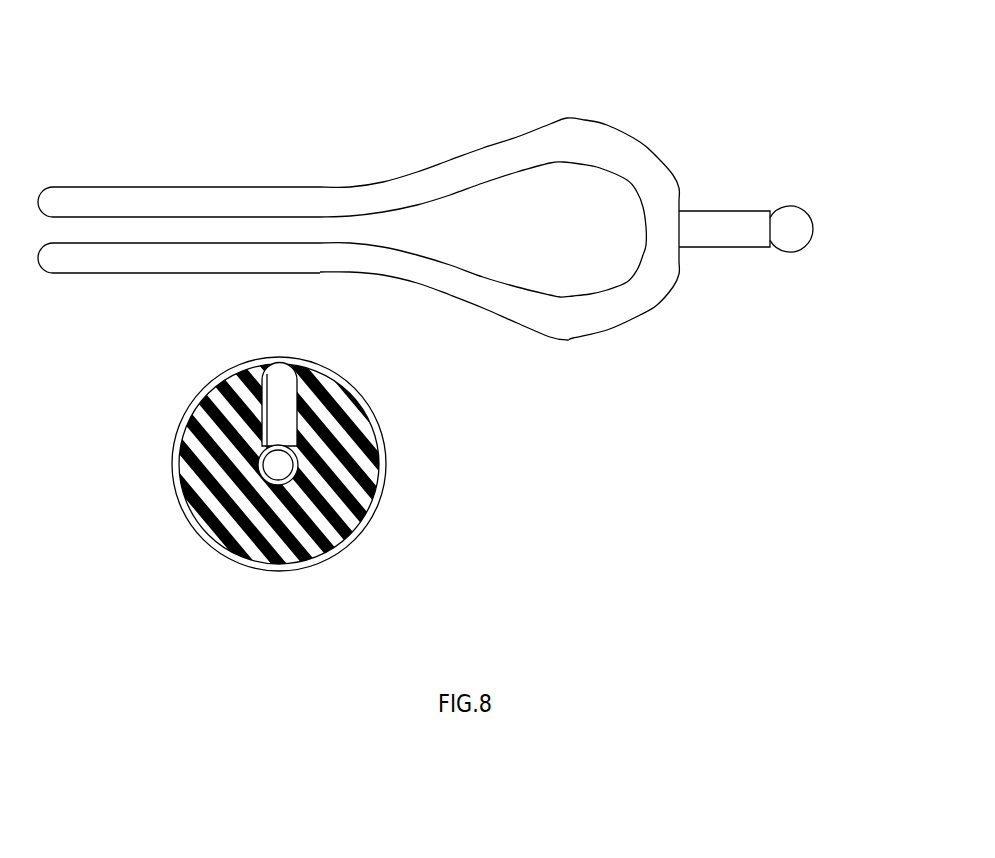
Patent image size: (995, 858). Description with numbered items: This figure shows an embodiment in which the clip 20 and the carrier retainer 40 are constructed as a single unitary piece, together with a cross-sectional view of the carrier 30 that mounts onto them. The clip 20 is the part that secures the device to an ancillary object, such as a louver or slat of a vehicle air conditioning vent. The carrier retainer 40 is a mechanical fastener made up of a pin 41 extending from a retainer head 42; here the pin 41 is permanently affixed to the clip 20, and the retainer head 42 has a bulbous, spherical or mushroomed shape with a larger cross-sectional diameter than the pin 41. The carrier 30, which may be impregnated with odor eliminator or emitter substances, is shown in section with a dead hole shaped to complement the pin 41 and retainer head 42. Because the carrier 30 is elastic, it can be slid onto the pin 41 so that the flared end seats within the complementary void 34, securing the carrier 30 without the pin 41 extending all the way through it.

The clip 20 is at (327, 125).
The carrier 30 is at (328, 467).
The complementary void 34 is at (287, 470).
The carrier retainer 40 is at (774, 213).
The pin 41 is at (716, 233).
The retainer head 42 is at (795, 233).